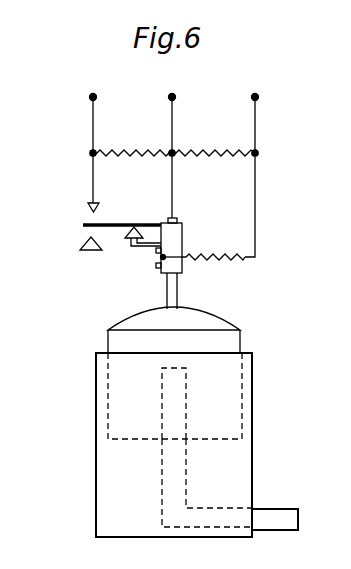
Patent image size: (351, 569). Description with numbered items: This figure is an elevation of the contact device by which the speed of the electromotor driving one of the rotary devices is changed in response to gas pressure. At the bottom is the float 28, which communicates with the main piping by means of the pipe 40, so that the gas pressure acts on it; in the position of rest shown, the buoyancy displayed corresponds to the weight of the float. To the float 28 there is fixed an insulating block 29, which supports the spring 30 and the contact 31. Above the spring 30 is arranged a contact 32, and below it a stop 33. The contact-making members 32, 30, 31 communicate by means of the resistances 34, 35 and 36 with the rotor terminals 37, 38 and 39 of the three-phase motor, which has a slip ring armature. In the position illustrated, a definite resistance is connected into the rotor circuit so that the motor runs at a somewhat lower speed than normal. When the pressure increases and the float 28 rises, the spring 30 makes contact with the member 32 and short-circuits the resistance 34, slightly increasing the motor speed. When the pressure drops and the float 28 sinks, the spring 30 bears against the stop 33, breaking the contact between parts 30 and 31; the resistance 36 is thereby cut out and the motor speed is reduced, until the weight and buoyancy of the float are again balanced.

The float 28 is at (225, 340).
The insulating block 29 is at (185, 237).
The spring 30 is at (83, 225).
The contact 31 is at (130, 247).
The contact 32 is at (88, 207).
The stop 33 is at (85, 250).
The resistance 34 is at (130, 150).
The resistance 35 is at (212, 150).
The resistance 36 is at (211, 256).
The rotor terminal 37 is at (94, 95).
The rotor terminal 38 is at (173, 95).
The rotor terminal 39 is at (256, 95).
The pipe 40 is at (281, 514).